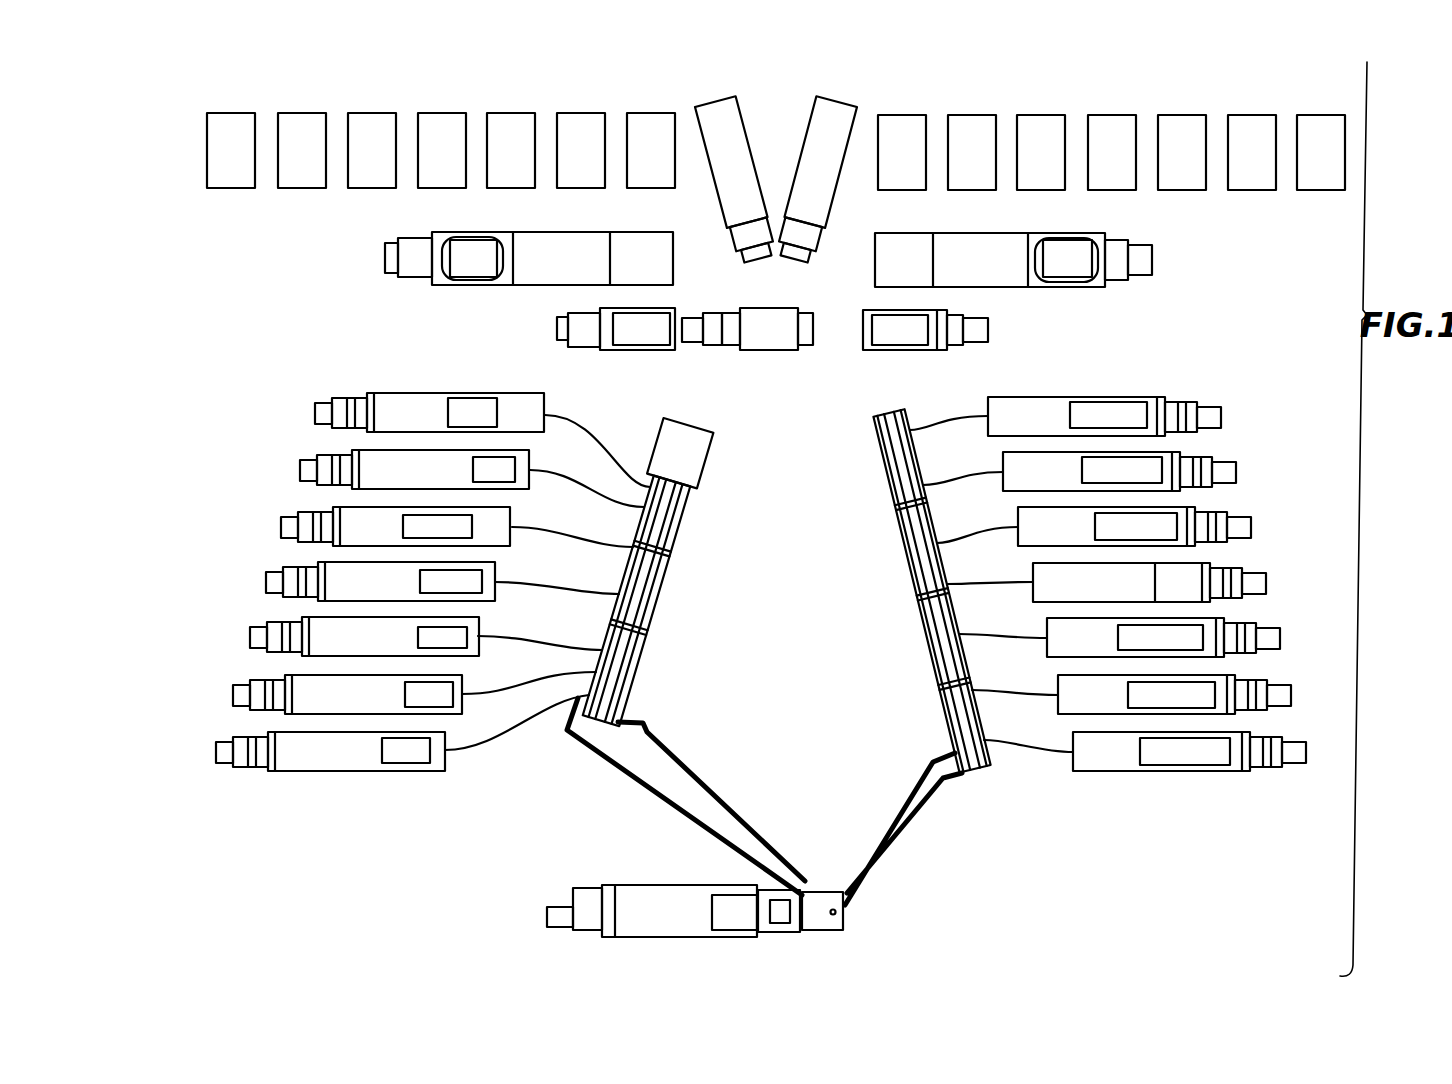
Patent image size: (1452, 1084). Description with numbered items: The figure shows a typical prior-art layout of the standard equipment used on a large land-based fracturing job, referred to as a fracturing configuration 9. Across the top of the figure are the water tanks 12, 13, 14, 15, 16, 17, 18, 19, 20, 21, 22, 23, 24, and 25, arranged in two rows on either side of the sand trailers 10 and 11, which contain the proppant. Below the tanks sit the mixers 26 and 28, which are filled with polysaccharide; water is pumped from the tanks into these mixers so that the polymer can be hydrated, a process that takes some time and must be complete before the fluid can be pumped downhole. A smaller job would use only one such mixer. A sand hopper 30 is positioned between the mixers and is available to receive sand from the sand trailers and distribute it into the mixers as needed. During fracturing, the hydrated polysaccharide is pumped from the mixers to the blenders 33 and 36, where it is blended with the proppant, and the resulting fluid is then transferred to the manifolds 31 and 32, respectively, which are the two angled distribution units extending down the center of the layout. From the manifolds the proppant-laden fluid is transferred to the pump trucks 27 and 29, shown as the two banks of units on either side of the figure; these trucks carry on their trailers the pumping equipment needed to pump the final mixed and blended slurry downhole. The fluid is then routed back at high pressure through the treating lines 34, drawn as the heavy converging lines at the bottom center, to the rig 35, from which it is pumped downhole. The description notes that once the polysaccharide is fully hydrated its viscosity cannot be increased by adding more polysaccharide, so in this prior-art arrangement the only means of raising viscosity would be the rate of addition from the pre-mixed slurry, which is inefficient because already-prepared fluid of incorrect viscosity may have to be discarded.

The fracturing configuration 9 is at (198, 252).
The sand trailer 10 is at (740, 118).
The sand trailer 11 is at (805, 122).
The water tank 12 is at (232, 113).
The water tank 13 is at (302, 113).
The water tank 14 is at (372, 113).
The water tank 15 is at (443, 113).
The water tank 16 is at (513, 113).
The water tank 17 is at (584, 113).
The water tank 18 is at (652, 113).
The water tank 19 is at (903, 115).
The water tank 20 is at (975, 115).
The water tank 21 is at (1041, 115).
The water tank 22 is at (1112, 115).
The water tank 23 is at (1183, 115).
The water tank 24 is at (1252, 115).
The water tank 25 is at (1323, 115).
The mixer 26 is at (523, 280).
The pump truck 27 is at (392, 517).
The mixer 28 is at (1013, 277).
The pump truck 29 is at (1175, 573).
The sand hopper 30 is at (772, 342).
The manifold 31 is at (668, 565).
The manifold 32 is at (925, 580).
The blender 33 is at (643, 342).
The treating lines 34 is at (867, 848).
The rig 35 is at (780, 930).
The blender 36 is at (890, 342).